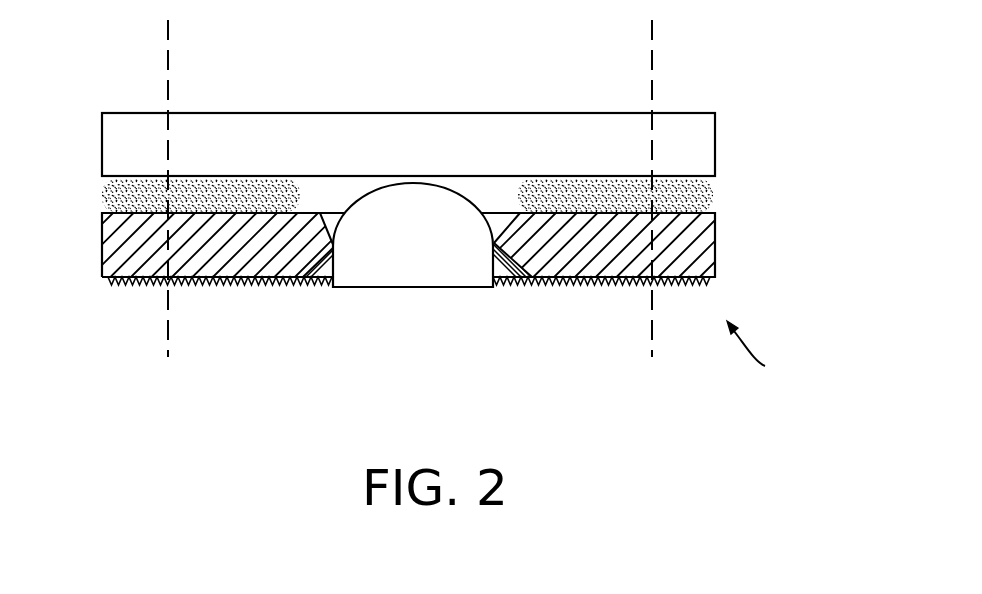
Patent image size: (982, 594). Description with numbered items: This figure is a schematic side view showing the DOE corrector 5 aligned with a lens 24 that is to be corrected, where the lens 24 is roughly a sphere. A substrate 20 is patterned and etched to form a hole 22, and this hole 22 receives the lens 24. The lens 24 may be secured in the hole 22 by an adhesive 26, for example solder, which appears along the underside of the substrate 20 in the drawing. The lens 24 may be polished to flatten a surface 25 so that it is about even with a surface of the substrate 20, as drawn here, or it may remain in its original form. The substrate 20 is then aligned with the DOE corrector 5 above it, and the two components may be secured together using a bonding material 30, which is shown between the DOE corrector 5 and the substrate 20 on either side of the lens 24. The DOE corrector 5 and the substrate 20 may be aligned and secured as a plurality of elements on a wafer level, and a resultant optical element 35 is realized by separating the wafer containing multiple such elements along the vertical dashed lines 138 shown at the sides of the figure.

The section line 138 is at (168, 29).
The DOE corrector 5 is at (108, 130).
The bonding material 30 is at (713, 195).
The substrate 20 is at (103, 272).
The hole 22 is at (315, 283).
The lens 24 is at (472, 283).
The surface 25 is at (352, 288).
The adhesive 26 is at (247, 284).
The resultant optical element 35 is at (765, 355).